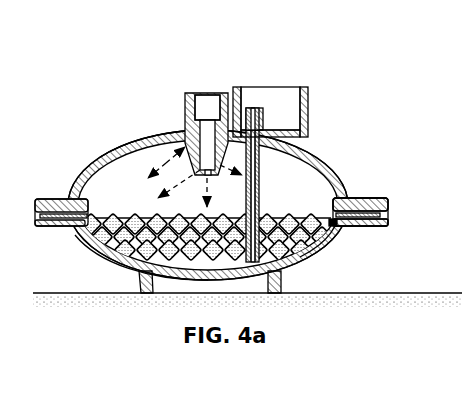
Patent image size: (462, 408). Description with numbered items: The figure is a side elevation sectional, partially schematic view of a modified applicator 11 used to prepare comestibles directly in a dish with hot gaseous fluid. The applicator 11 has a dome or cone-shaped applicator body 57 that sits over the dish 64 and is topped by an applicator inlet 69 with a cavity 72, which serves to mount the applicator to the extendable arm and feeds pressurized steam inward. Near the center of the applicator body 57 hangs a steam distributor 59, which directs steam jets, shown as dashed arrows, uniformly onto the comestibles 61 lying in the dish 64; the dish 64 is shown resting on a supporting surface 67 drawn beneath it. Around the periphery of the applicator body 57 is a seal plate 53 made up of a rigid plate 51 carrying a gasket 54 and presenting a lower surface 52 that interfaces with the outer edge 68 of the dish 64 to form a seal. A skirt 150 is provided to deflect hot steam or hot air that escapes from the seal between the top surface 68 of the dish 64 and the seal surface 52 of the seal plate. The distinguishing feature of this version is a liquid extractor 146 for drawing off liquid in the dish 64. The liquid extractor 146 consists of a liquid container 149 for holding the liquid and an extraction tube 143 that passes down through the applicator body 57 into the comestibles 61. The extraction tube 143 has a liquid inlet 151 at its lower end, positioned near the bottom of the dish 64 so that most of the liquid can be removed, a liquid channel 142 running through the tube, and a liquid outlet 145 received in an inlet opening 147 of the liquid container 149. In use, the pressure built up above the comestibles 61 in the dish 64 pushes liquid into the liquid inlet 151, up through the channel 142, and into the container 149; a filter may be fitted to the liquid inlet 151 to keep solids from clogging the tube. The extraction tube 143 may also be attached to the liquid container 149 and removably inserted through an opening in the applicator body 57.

The applicator 11 is at (346, 162).
The rigid plate 51 is at (364, 210).
The lower surface 52 is at (366, 218).
The seal plate 53 is at (48, 198).
The gasket 54 is at (385, 212).
The applicator body 57 is at (100, 157).
The steam distributor 59 is at (157, 135).
The comestibles 61 is at (133, 217).
The dish 64 is at (97, 253).
The support surface 67 is at (393, 308).
The outer edge 68 is at (345, 238).
The applicator inlet 69 is at (200, 113).
The cavity 72 is at (197, 116).
The liquid channel 142 is at (258, 203).
The extraction tube 143 is at (254, 169).
The liquid outlet 145 is at (255, 108).
The liquid extractor 146 is at (299, 75).
The inlet opening 147 is at (266, 118).
The liquid container 149 is at (291, 125).
The skirt 150 is at (381, 223).
The liquid inlet 151 is at (289, 268).